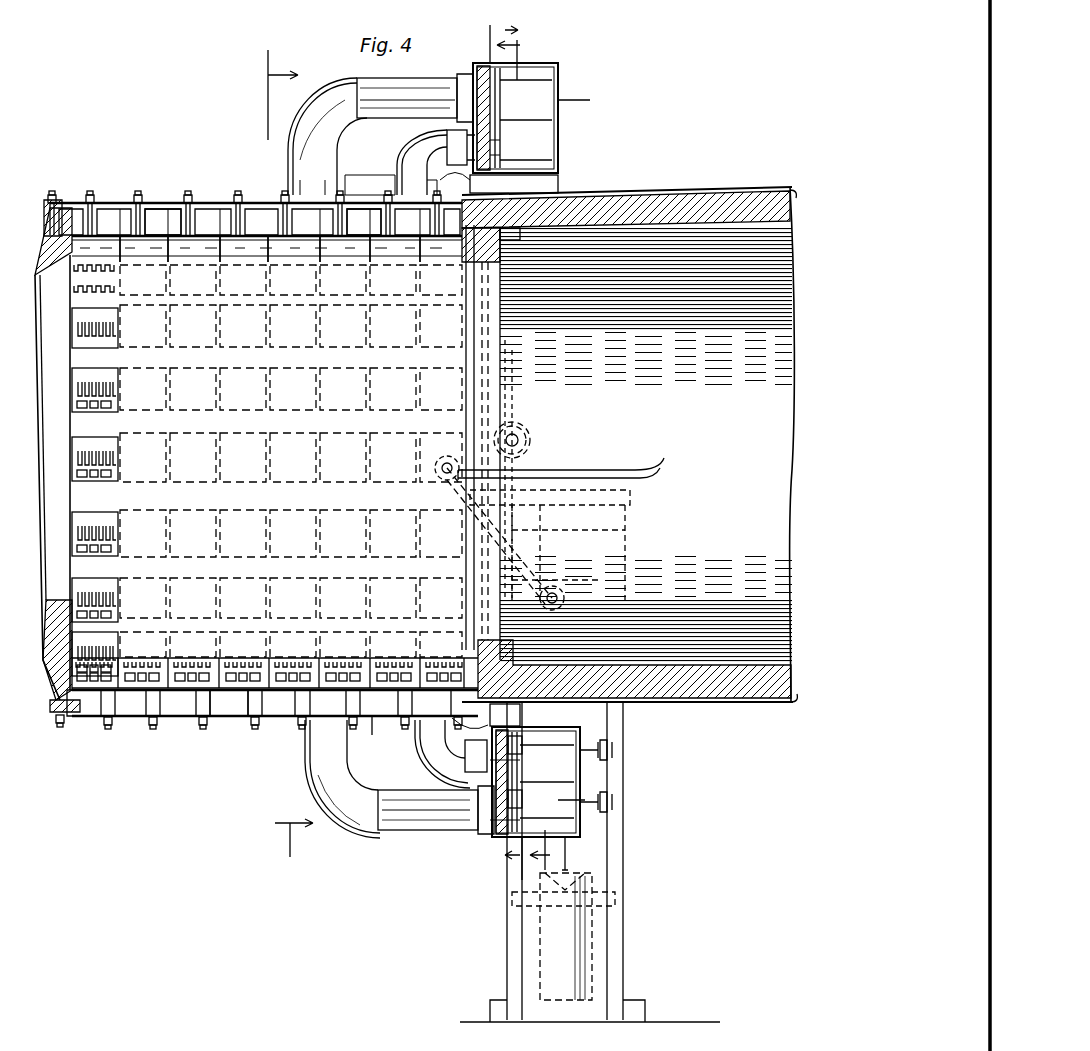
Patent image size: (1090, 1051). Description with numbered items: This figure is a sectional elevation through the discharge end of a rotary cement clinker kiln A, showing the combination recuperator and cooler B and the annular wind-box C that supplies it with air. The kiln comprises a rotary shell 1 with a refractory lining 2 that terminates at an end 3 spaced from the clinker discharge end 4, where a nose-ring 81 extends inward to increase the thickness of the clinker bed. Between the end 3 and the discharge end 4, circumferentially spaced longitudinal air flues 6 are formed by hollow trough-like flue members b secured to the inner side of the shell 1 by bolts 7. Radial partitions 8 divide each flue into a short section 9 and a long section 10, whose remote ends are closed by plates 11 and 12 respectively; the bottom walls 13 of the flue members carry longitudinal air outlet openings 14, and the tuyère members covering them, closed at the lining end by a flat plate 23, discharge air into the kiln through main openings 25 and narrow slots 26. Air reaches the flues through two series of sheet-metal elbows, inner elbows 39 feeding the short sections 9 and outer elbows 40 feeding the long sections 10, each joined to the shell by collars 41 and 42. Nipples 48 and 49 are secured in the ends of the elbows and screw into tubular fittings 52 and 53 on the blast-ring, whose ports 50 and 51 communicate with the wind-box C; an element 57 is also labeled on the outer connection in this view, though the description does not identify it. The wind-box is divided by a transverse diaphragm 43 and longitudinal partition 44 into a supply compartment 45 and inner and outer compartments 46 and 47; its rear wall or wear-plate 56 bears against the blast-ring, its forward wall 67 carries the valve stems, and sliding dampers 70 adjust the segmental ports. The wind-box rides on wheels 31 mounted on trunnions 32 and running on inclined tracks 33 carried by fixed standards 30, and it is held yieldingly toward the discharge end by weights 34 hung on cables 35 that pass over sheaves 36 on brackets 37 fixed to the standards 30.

The rotary shell 1 is at (605, 198).
The lining 2 is at (788, 445).
The end of lining 3 is at (468, 640).
The clinker discharge end 4 is at (52, 546).
The air flues 6 is at (158, 240).
The bolts 7 is at (128, 222).
The radial partitions 8 is at (378, 728).
The short flue sections 9 is at (393, 690).
The long flue sections 10 is at (258, 240).
The plate 11 is at (466, 452).
The plate 12 is at (76, 212).
The bottom walls 13 is at (215, 462).
The air outlet openings 14 is at (492, 884).
The flat plate 23 is at (462, 265).
The openings 25 is at (112, 548).
The narrow slots 26 is at (104, 338).
The frames or standards 30 is at (622, 853).
The wheels 31 is at (530, 440).
The studs or trunnions 32 is at (522, 430).
The tracks 33 is at (625, 470).
The weights 34 is at (520, 946).
The cables 35 is at (525, 580).
The sheaves 36 is at (442, 456).
The brackets 37 is at (455, 540).
The inner elbows 39 is at (420, 140).
The outer elbows 40 is at (292, 110).
The collar or flange 41 is at (398, 185).
The collar or flange 42 is at (345, 188).
The transverse diaphragm 43 is at (500, 142).
The longitudinal partition 44 is at (500, 130).
The air supply compartment 45 is at (560, 90).
The inner compartment 46 is at (500, 159).
The outer compartment 47 is at (500, 90).
The inner nipples 48 is at (438, 145).
The outer nipples 49 is at (420, 95).
The ports 50 is at (445, 132).
The ports 51 is at (470, 92).
The tubular fitting 52 is at (498, 187).
The tubular fitting 53 is at (475, 90).
The rear wall or wear-plate 56 is at (500, 108).
The pipe 57 is at (430, 100).
The forward wall 67 is at (580, 814).
The sliding dampers 70 is at (500, 812).
The nose-ring 81 is at (50, 238).
The kiln A is at (683, 178).
The recuperator and cooler B is at (236, 270).
The wind-box C is at (575, 135).
The flue members b is at (286, 310).